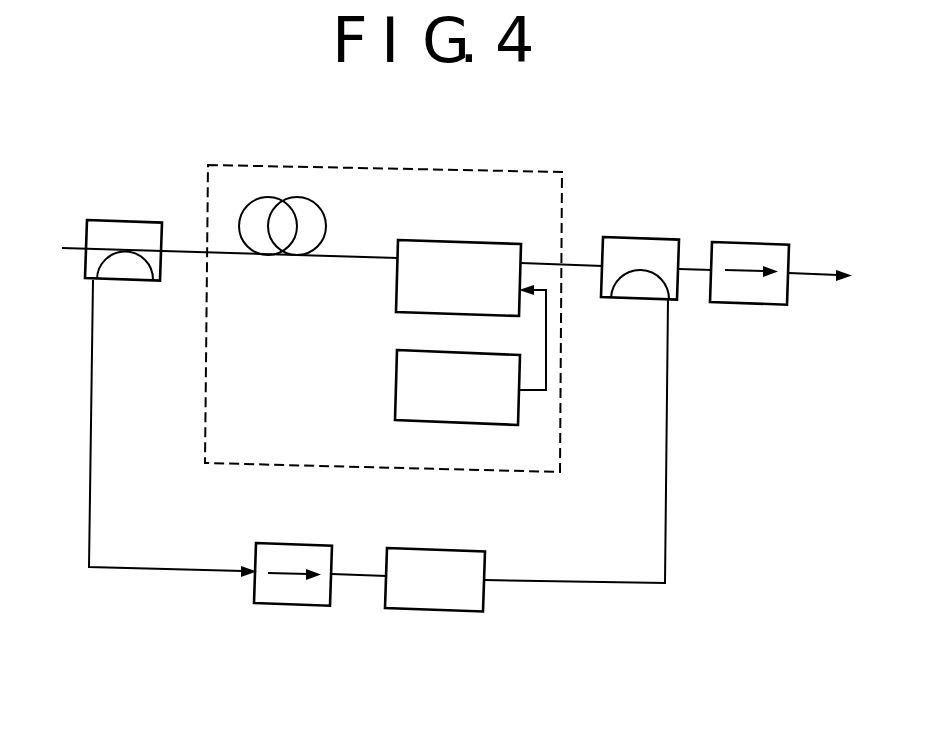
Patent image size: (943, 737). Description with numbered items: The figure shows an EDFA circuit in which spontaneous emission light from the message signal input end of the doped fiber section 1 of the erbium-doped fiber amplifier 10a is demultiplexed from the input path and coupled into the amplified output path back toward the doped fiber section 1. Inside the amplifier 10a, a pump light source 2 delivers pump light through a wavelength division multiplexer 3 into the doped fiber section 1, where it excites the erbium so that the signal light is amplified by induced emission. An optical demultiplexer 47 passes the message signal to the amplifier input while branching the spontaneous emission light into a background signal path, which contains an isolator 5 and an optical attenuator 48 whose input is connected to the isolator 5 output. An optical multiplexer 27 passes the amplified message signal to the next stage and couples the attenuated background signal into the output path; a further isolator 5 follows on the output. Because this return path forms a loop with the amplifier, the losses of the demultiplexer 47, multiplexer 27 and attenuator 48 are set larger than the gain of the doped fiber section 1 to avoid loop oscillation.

The optical demultiplexer 47 is at (129, 220).
The doped fiber section 1 is at (320, 203).
The wavelength division multiplexer 3 is at (503, 241).
The pump light source 2 is at (397, 378).
The erbium-doped fiber amplifier 10a is at (563, 443).
The optical multiplexer 27 is at (648, 237).
The optical isolator 5 is at (742, 242).
The optical attenuator 48 is at (485, 600).